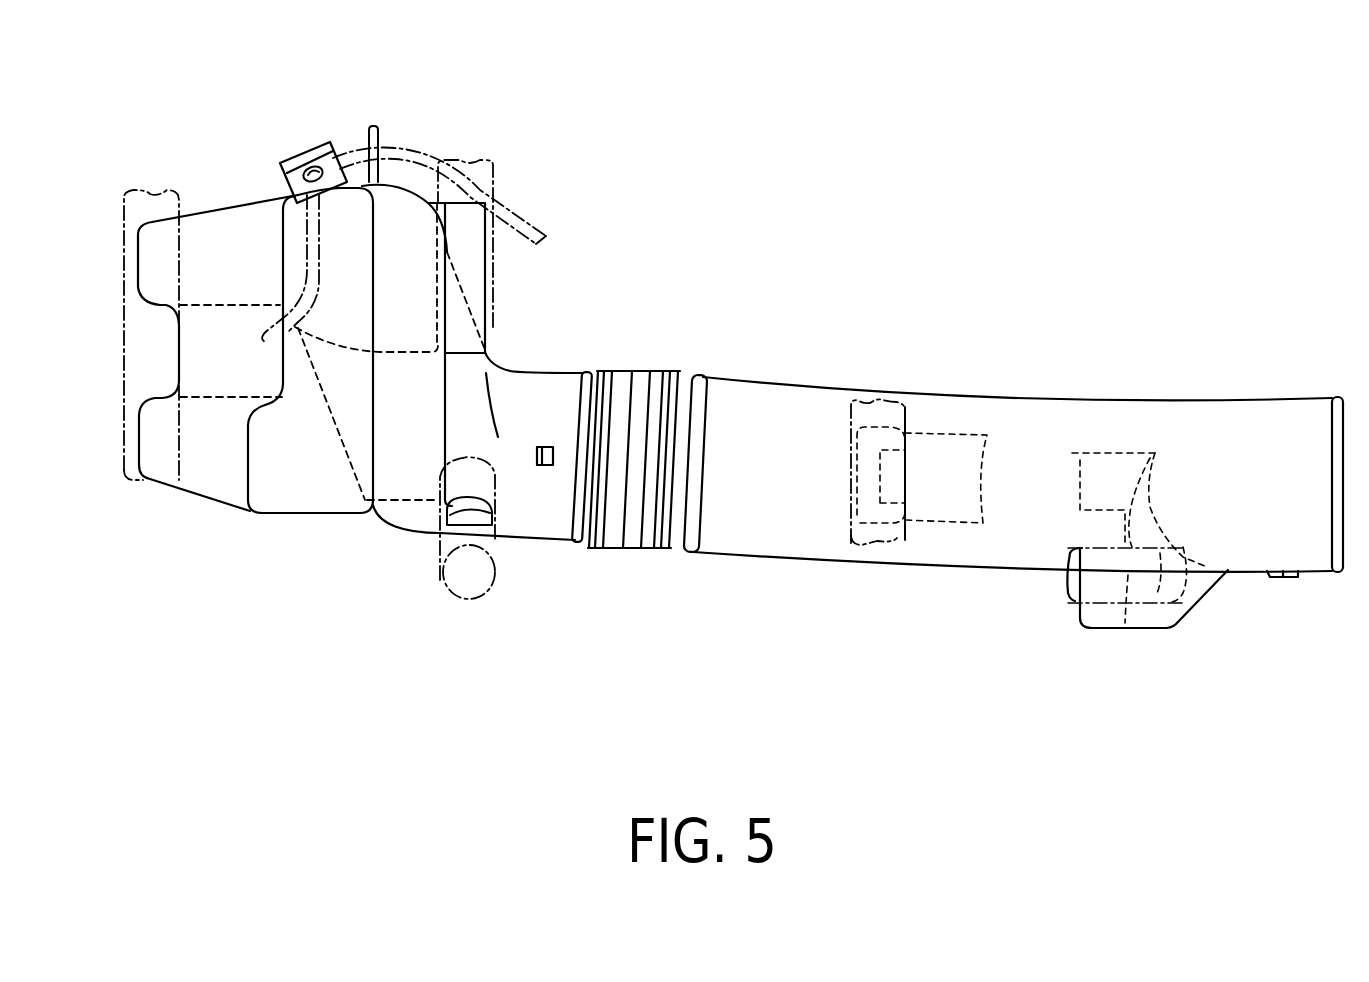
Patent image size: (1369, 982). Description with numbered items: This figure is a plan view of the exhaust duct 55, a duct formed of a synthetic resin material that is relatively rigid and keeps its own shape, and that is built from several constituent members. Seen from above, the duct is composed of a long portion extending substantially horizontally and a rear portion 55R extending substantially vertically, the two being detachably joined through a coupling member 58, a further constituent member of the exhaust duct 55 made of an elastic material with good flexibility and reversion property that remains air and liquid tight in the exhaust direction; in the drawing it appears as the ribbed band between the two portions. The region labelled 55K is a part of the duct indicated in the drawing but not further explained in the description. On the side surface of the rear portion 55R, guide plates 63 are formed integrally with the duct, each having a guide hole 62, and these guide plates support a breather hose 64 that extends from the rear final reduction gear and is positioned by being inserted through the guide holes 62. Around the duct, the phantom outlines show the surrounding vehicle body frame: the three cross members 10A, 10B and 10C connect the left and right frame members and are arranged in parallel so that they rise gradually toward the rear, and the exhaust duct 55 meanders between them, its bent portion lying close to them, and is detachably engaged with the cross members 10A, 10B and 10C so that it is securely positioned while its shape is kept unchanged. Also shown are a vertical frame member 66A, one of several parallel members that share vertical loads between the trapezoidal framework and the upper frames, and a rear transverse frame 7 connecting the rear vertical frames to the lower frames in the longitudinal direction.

The exhaust duct 55 is at (927, 146).
The duct wall portion 55K is at (1161, 407).
The rear portion 55R is at (313, 500).
The coupling member 58 is at (665, 371).
The guide hole 62 is at (306, 175).
The guide plate 63 is at (322, 190).
The breather hose 64 is at (408, 150).
The vertical frame member 66A is at (480, 578).
The cross member 10A is at (122, 366).
The cross member 10B is at (496, 283).
The cross member 10C is at (920, 408).
The rear transverse frame 7 is at (1104, 594).